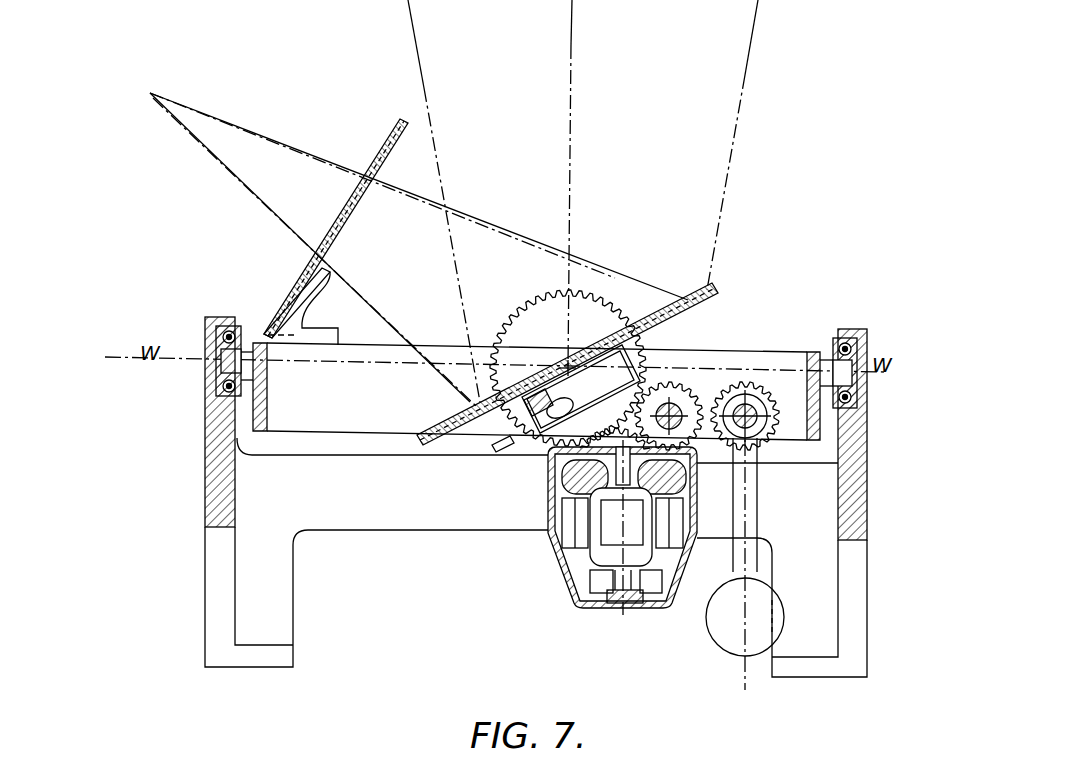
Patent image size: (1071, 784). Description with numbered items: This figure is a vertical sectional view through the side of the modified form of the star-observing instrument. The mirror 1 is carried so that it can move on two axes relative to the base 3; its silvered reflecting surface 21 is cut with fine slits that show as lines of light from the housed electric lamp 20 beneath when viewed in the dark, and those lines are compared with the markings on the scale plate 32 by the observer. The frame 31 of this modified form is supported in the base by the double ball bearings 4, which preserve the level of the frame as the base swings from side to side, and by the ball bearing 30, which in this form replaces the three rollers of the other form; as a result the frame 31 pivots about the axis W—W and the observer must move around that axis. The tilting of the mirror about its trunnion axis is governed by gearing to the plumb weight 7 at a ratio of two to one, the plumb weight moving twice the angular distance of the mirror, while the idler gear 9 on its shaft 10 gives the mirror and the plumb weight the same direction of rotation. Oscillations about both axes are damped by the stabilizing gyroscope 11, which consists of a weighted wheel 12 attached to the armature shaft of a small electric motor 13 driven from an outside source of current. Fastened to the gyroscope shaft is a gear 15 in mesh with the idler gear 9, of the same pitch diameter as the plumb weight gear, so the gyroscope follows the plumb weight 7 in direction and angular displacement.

The mirror 1 is at (717, 279).
The base 3 is at (204, 517).
The double ball bearings 4 is at (836, 333).
The plumb weight 7 is at (705, 636).
The idler gear 9 is at (703, 376).
The shaft 10 is at (666, 396).
The stabilizing gyroscope 11 is at (595, 613).
The weighted wheel 12 is at (546, 498).
The electric motor 13 is at (566, 553).
The gear 15 is at (547, 450).
The housed electric lamp 20 is at (506, 452).
The silvered reflecting surface 21 is at (722, 286).
The ball bearing 30 is at (243, 319).
The frame 31 is at (760, 347).
The scale plate 32 is at (390, 126).